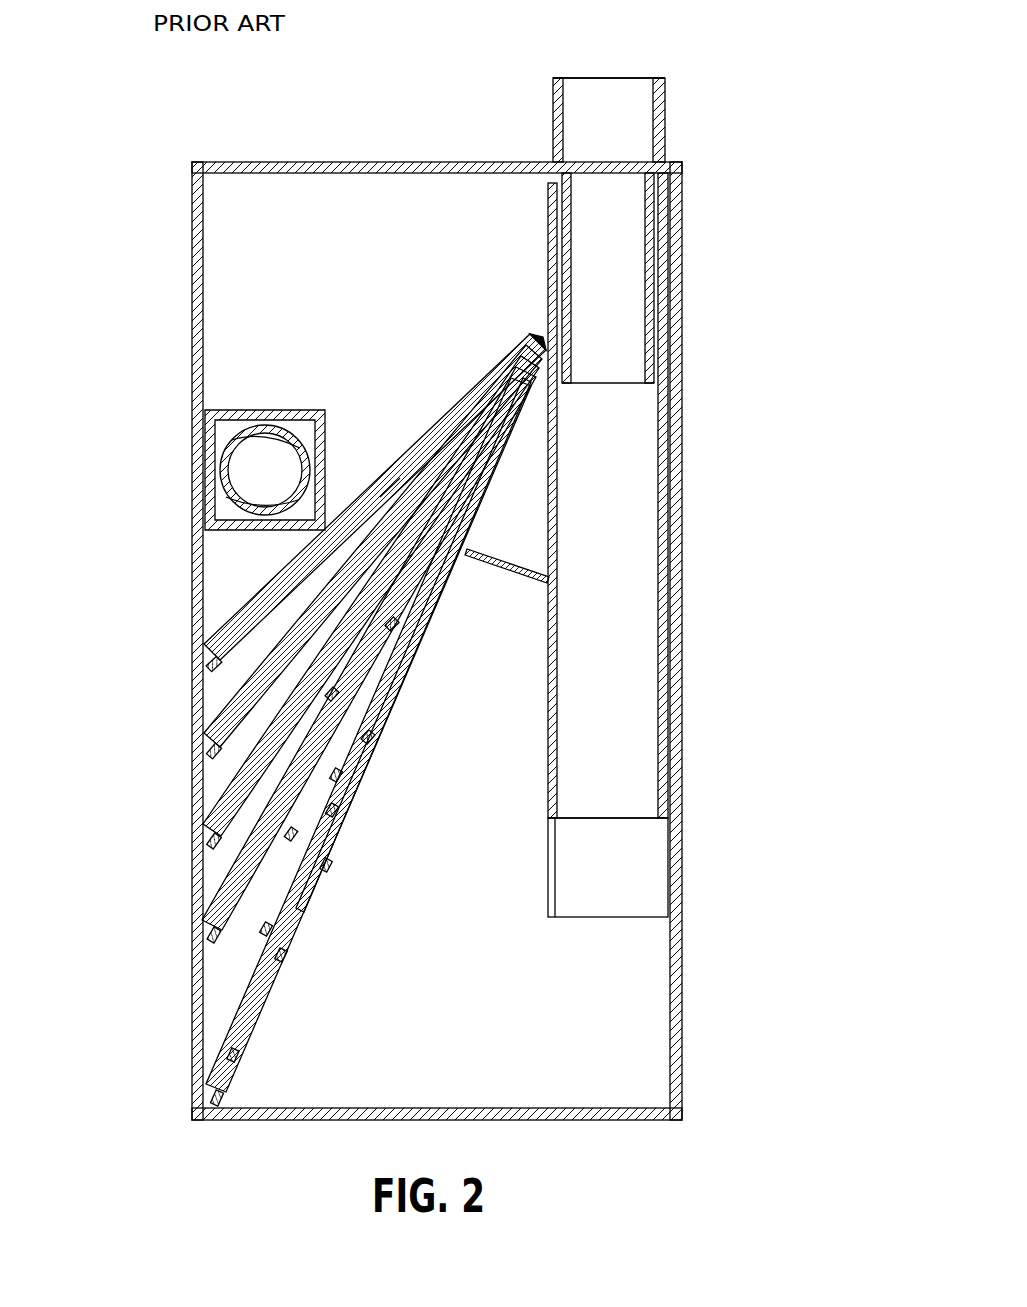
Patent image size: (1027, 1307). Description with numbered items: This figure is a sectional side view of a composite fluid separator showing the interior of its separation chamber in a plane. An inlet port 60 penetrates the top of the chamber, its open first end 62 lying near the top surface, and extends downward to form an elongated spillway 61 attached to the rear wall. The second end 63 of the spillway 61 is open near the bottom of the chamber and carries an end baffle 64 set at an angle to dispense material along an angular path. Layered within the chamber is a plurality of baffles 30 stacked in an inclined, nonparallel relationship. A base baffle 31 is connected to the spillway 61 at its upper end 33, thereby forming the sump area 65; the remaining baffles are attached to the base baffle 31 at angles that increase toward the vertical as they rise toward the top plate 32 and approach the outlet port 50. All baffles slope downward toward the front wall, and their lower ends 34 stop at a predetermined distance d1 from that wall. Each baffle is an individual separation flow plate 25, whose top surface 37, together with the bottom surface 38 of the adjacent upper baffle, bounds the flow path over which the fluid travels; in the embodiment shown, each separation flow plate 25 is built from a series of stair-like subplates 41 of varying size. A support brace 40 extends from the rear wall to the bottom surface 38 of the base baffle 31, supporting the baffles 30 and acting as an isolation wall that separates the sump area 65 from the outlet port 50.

The plurality of baffles 30 is at (347, 462).
The inlet port 60 is at (656, 130).
The first end of inlet port 62 is at (658, 78).
The spillway 61 is at (627, 522).
The sump area 65 is at (497, 765).
The second end of spillway 63 is at (633, 805).
The end baffle 64 is at (637, 875).
The outlet port 50 is at (210, 438).
The separation flow plate 25 is at (242, 615).
The lower ends of baffles 34 is at (212, 640).
The predetermined distance d1 is at (212, 657).
The upper end of base baffle 33 is at (541, 337).
The top plate 32 is at (392, 485).
The base baffle 31 is at (410, 665).
The support brace 40 is at (488, 566).
The top surface of separation flow plate 37 is at (392, 628).
The bottom surface 38 is at (332, 695).
The subplates 41 is at (367, 737).